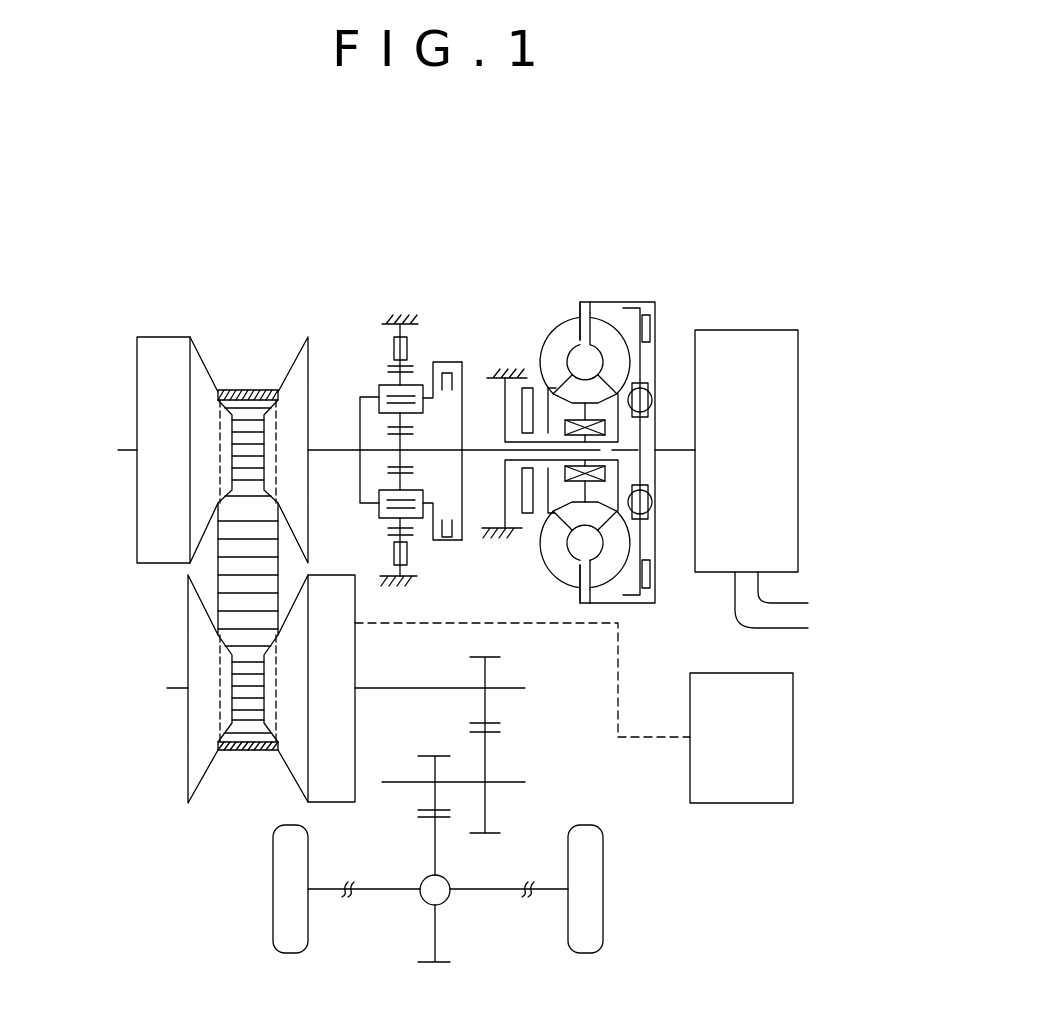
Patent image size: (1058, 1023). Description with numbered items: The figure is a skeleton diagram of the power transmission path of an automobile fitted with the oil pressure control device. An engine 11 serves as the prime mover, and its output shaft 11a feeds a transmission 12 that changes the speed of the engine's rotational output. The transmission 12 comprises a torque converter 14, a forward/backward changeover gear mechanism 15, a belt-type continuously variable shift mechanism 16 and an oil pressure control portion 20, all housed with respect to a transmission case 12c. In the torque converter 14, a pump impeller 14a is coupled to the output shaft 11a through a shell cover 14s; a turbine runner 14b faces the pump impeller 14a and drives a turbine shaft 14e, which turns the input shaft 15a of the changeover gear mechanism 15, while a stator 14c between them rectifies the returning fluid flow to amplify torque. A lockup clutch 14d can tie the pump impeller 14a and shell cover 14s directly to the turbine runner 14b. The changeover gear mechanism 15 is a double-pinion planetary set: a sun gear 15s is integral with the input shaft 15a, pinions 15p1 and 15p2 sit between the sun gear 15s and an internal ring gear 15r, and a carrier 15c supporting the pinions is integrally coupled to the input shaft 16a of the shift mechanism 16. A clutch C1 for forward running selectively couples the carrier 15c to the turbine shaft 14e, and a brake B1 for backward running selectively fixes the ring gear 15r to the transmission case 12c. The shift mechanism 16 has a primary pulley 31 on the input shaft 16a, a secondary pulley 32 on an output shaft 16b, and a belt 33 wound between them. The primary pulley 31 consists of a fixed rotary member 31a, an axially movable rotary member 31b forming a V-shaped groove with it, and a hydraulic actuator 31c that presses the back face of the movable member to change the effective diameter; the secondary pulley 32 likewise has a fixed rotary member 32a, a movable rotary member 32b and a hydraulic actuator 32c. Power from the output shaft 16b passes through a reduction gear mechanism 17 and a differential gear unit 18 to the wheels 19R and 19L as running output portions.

The engine 11 is at (752, 330).
The output shaft 11a is at (672, 452).
The transmission 12 is at (335, 274).
The transmission case 12c is at (406, 320).
The torque converter 14 is at (578, 290).
The pump impeller 14a is at (558, 342).
The turbine runner 14b is at (605, 340).
The stator 14c is at (605, 428).
The lockup clutch 14d is at (653, 575).
The turbine shaft 14e is at (612, 452).
The shell cover 14s is at (658, 318).
The forward/backward changeover gear mechanism 15 is at (452, 315).
The input shaft 15a is at (458, 450).
The carrier 15c is at (396, 380).
The pinion 15p1 is at (400, 376).
The pinion 15p2 is at (397, 490).
The internal ring gear 15r is at (414, 538).
The sun gear 15s is at (397, 468).
The belt-type continuously variable shift mechanism 16 is at (241, 284).
The input shaft 16a is at (348, 450).
The output shaft 16b is at (397, 690).
The reduction gear mechanism 17 is at (530, 767).
The differential gear unit 18 is at (447, 900).
The wheel 19L is at (273, 905).
The wheel 19R is at (603, 888).
The oil pressure control portion 20 is at (795, 737).
The primary pulley 31 is at (212, 355).
The fixed rotary member 31a is at (292, 362).
The movable rotary member 31b is at (203, 447).
The hydraulic actuator 31c is at (152, 372).
The secondary pulley 32 is at (152, 809).
The fixed rotary member 32a is at (183, 628).
The movable rotary member 32b is at (285, 772).
The hydraulic actuator 32c is at (330, 810).
The belt 33 is at (250, 390).
The brake B1 is at (392, 322).
The clutch C1 is at (444, 544).